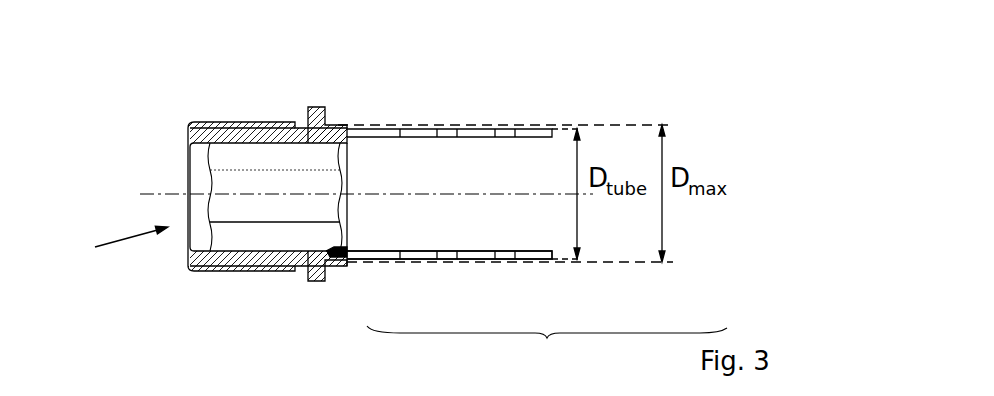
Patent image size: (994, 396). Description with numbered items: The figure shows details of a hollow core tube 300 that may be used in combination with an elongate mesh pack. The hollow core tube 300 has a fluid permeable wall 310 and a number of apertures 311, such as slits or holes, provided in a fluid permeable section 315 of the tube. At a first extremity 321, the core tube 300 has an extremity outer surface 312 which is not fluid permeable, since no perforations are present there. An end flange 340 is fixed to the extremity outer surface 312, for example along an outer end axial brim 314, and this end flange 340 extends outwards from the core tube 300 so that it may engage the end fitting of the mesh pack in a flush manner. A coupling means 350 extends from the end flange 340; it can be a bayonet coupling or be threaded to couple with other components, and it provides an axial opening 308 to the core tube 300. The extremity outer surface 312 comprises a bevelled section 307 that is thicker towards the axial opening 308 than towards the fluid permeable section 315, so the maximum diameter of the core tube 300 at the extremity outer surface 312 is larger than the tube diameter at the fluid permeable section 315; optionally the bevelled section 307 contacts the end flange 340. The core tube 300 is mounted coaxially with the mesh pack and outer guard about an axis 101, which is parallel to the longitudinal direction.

The axis 101 is at (163, 190).
The hollow core tube 300 is at (500, 130).
The bevelled section 307 is at (338, 118).
The axial opening 308 is at (108, 238).
The fluid permeable wall 310 is at (530, 257).
The apertures 311 is at (422, 257).
The extremity outer surface 312 is at (353, 255).
The outer end axial brim 314 is at (348, 251).
The fluid permeable section 315 is at (547, 351).
The first extremity 321 is at (443, 84).
The end flange 340 is at (315, 270).
The coupling means 350 is at (203, 122).